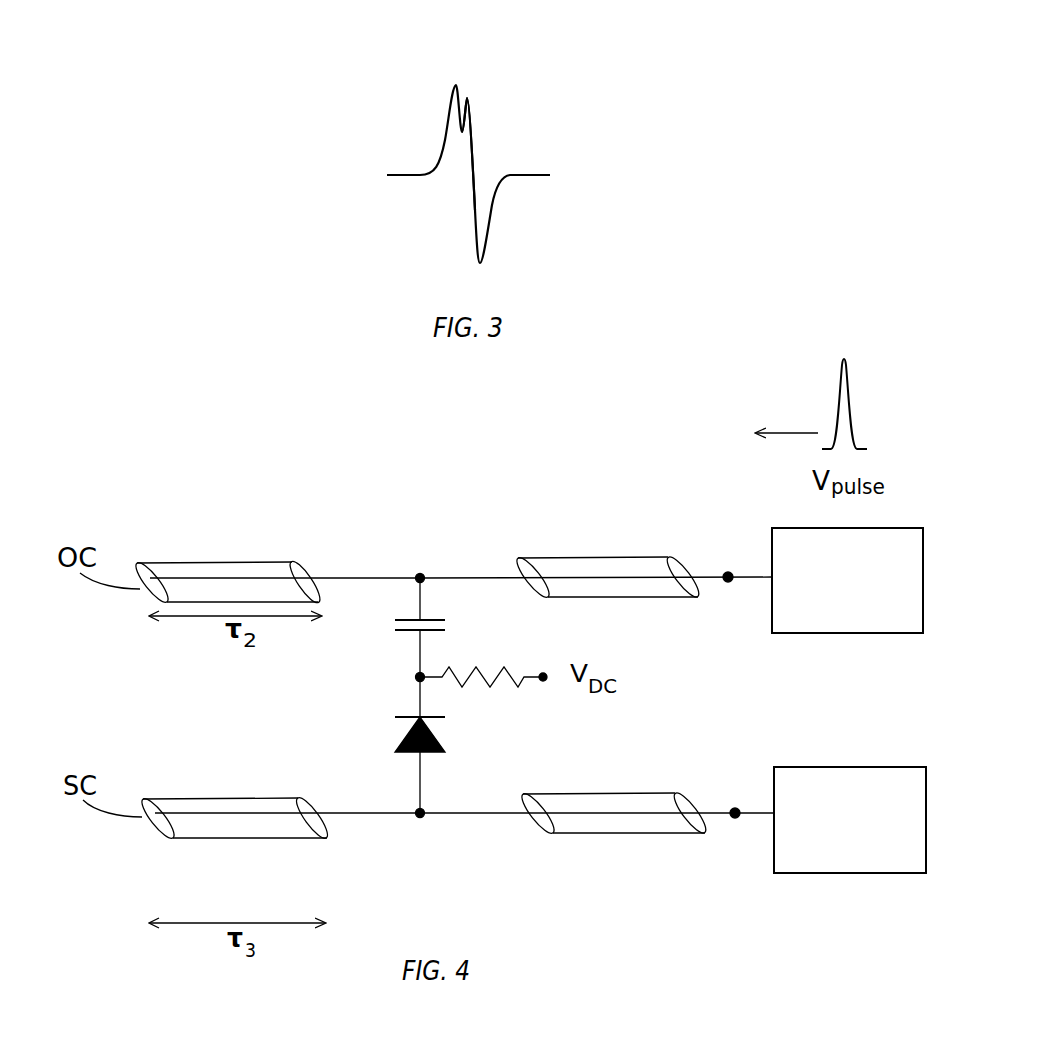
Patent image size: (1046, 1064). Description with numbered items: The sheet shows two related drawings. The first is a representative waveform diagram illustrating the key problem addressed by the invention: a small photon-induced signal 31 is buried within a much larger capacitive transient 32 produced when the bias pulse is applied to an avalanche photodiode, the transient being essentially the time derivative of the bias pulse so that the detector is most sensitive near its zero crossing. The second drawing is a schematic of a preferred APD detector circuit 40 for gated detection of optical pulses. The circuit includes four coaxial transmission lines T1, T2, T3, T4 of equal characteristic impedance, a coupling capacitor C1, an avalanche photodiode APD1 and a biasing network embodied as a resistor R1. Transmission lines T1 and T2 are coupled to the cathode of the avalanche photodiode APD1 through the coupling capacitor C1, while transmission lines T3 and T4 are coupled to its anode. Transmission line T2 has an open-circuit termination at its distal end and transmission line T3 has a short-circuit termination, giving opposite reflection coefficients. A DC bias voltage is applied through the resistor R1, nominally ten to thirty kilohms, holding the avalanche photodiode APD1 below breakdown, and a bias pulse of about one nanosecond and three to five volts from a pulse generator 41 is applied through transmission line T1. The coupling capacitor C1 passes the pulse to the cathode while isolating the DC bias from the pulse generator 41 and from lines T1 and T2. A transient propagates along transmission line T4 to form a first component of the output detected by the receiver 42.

In FIG. 3, the photon-induced signal 31 is at (476, 109).
In FIG. 3, the capacitive transient 32 is at (463, 79).
In FIG. 4, the APD detector circuit 40 is at (319, 491).
In FIG. 4, the pulse generator 41 is at (847, 580).
In FIG. 4, the receiver 42 is at (850, 820).
In FIG. 4, the transmission line T1 is at (570, 557).
In FIG. 4, the transmission line T2 is at (209, 563).
In FIG. 4, the transmission line T3 is at (255, 838).
In FIG. 4, the transmission line T4 is at (635, 835).
In FIG. 4, the coupling capacitor C1 is at (442, 626).
In FIG. 4, the resistor R1 is at (483, 710).
In FIG. 4, the avalanche photodiode APD1 is at (407, 752).